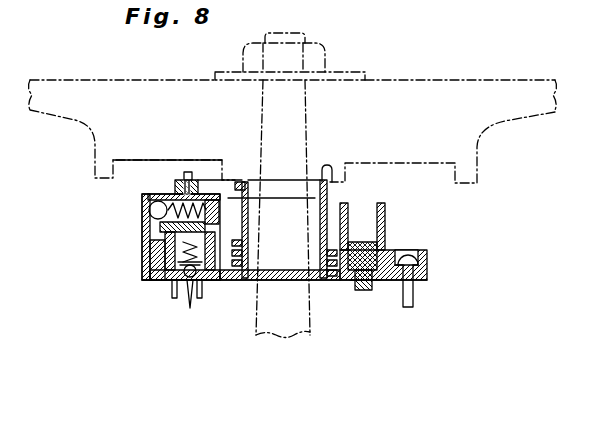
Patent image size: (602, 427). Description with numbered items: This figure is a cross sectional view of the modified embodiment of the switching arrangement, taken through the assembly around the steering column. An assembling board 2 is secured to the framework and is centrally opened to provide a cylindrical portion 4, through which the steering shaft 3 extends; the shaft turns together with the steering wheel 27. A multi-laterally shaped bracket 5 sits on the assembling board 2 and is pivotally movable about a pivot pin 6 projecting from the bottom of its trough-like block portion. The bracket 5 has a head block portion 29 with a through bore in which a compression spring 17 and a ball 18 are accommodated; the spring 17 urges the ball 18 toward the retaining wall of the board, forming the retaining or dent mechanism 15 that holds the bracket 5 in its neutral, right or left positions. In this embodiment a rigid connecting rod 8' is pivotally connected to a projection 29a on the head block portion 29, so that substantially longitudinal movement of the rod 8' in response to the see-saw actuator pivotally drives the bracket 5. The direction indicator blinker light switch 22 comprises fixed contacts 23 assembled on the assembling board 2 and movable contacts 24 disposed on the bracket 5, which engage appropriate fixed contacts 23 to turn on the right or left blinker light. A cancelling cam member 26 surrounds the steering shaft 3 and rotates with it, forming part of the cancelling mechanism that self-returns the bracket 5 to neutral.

The steering wheel 27 is at (505, 80).
The steering shaft 3 is at (310, 95).
The projection 29a is at (189, 176).
The head block portion 29 is at (220, 185).
The retaining (dent) mechanism 15 is at (140, 188).
The connecting rod 8' is at (172, 164).
The cancelling cam member 26 is at (328, 191).
The ball 18 is at (148, 212).
The spring 17 is at (143, 232).
The cylindrical portion 4 is at (249, 224).
The bracket 5 is at (387, 216).
The movable contacts 24 is at (143, 262).
The assembling board 2 is at (141, 276).
The direction indicator blinker light switch 22 is at (160, 283).
The fixed contacts 23 is at (190, 296).
The pivot pin 6 is at (365, 291).